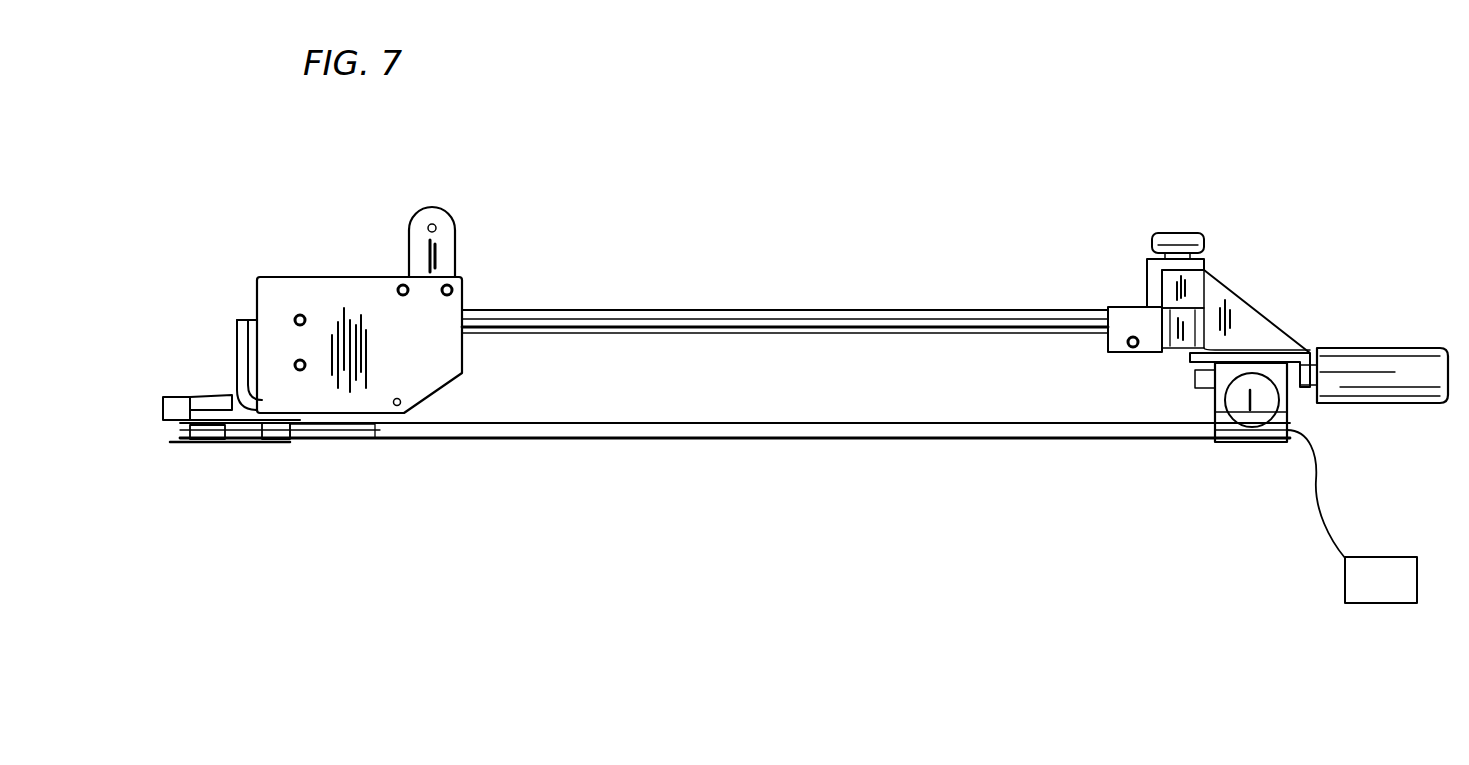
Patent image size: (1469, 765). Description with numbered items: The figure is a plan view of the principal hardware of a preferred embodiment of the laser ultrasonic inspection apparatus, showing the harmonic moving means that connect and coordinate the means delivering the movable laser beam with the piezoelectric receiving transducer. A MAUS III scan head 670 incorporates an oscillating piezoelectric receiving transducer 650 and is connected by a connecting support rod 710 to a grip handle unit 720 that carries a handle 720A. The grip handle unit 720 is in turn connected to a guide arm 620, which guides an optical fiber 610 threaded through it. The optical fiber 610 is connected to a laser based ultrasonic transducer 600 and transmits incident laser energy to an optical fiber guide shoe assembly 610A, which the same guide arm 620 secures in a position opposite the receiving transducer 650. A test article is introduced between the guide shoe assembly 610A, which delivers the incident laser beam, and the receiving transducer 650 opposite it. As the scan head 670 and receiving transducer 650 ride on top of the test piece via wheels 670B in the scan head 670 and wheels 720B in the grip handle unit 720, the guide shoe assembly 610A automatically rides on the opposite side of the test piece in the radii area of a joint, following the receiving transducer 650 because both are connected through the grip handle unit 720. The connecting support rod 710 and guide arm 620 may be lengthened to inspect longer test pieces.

The laser based ultrasonic transducer 600 is at (1381, 580).
The optical fiber 610 is at (1315, 495).
The optical fiber guide shoe assembly 610A is at (178, 430).
The guide arm 620 is at (815, 430).
The oscillating piezoelectric receiving transducer 650 is at (170, 400).
The MAUS III scan head 670 is at (323, 276).
The wheels 670B is at (290, 442).
The connecting support rod 710 is at (752, 312).
The grip handle unit 720 is at (1278, 290).
The handle 720A is at (1408, 392).
The wheels 720B is at (1238, 413).